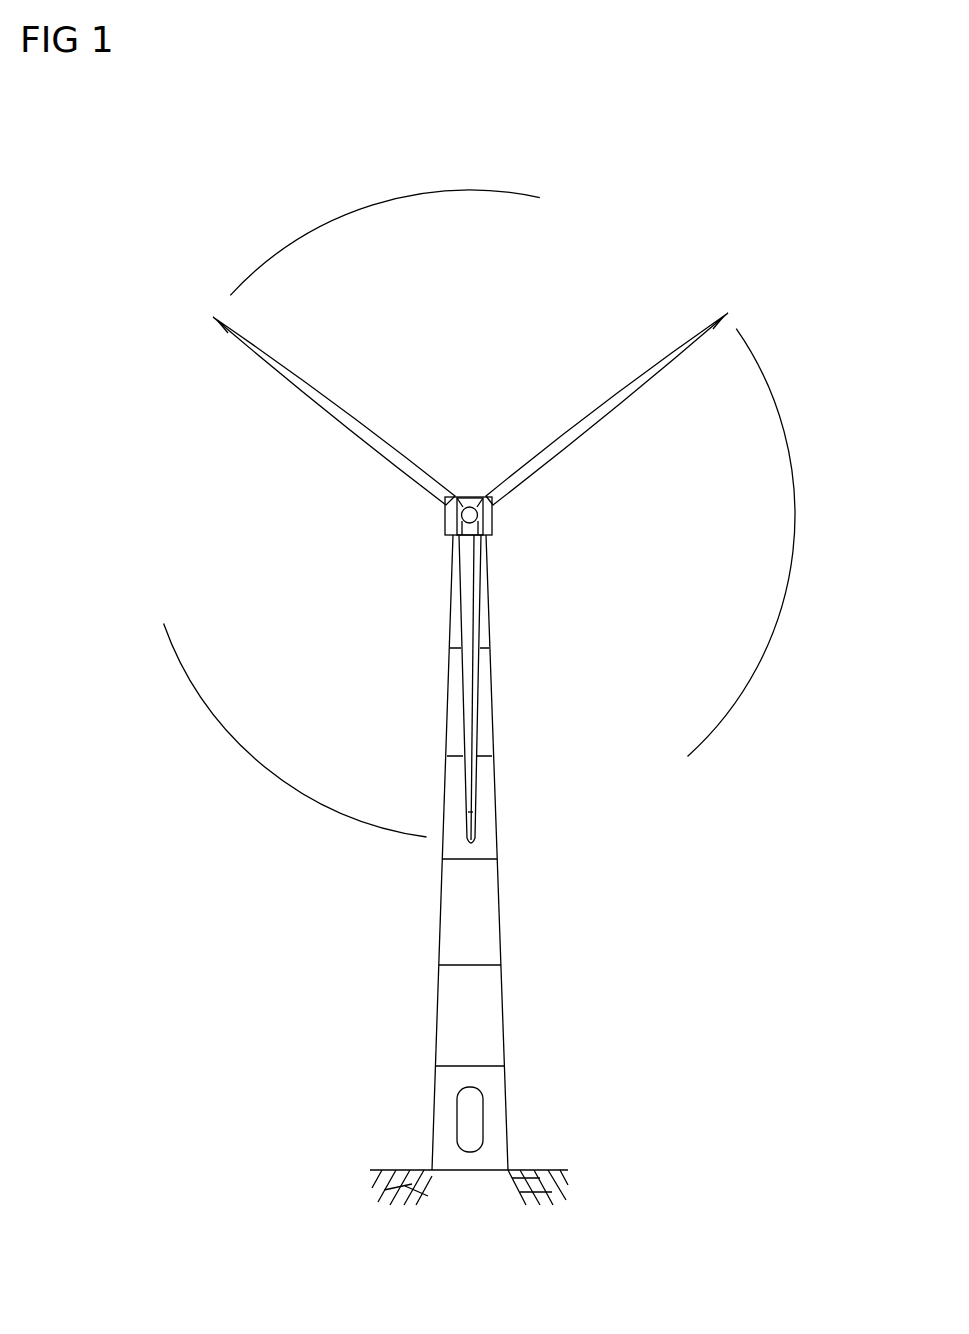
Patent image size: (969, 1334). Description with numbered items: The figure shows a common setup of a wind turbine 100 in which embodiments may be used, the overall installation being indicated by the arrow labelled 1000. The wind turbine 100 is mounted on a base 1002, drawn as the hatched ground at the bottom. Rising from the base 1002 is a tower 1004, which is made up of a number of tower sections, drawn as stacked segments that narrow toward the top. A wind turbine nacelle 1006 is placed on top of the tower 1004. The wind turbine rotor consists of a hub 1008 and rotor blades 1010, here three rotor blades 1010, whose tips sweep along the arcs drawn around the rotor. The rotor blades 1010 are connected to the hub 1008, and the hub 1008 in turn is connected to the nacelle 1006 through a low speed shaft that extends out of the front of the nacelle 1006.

The wind turbine 100 is at (785, 118).
The wind turbine installation 1000 is at (396, 986).
The base 1002 is at (386, 1180).
The tower 1004 is at (492, 911).
The wind turbine nacelle 1006 is at (495, 522).
The hub 1008 is at (446, 528).
The rotor blade 1010 is at (472, 730).